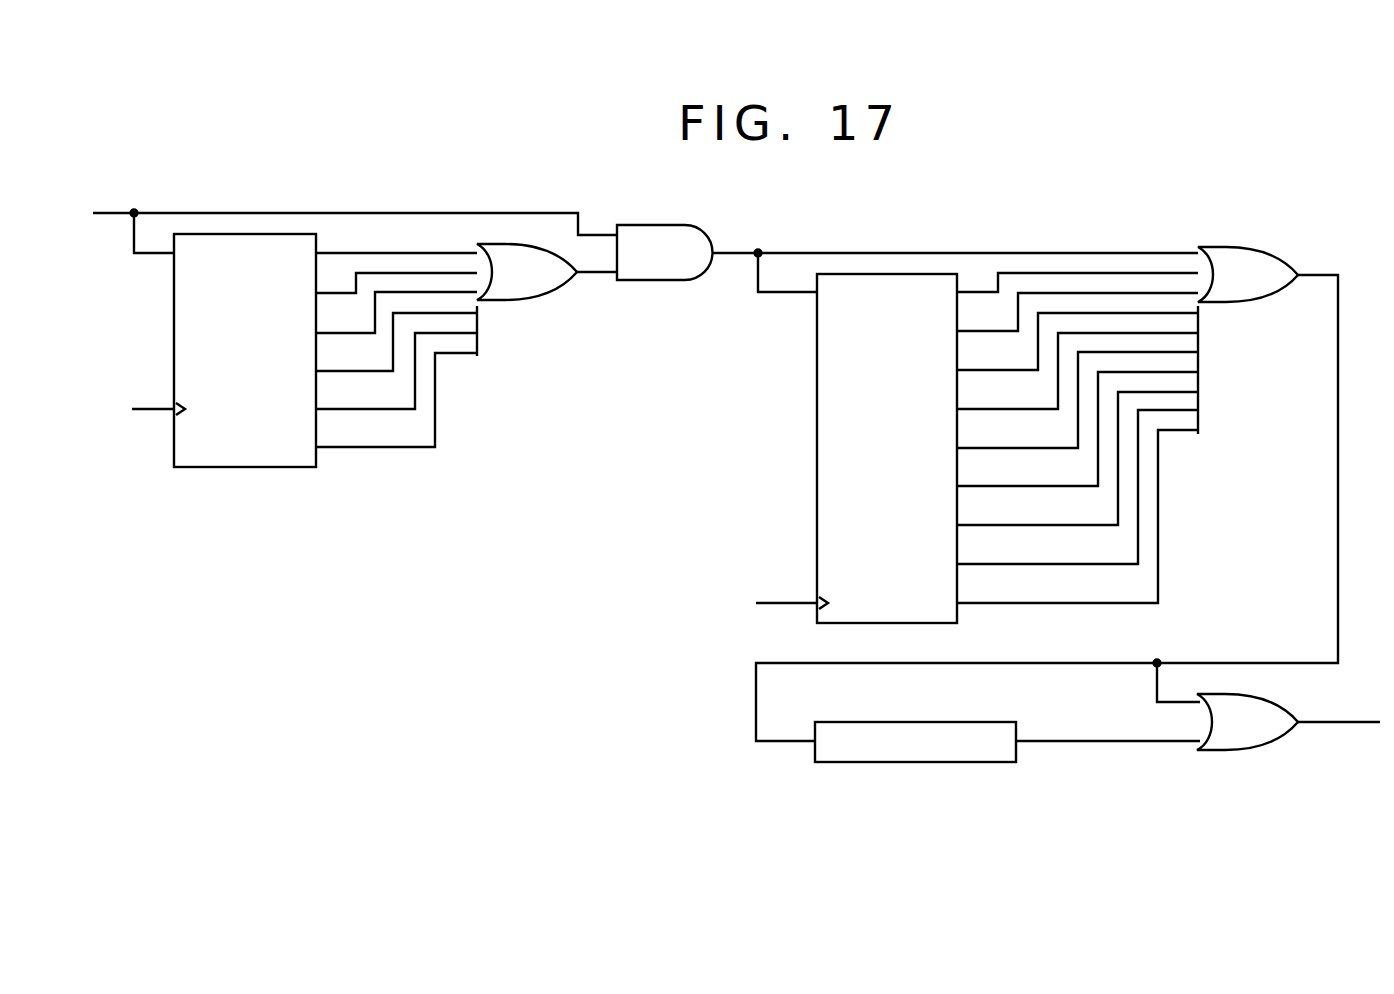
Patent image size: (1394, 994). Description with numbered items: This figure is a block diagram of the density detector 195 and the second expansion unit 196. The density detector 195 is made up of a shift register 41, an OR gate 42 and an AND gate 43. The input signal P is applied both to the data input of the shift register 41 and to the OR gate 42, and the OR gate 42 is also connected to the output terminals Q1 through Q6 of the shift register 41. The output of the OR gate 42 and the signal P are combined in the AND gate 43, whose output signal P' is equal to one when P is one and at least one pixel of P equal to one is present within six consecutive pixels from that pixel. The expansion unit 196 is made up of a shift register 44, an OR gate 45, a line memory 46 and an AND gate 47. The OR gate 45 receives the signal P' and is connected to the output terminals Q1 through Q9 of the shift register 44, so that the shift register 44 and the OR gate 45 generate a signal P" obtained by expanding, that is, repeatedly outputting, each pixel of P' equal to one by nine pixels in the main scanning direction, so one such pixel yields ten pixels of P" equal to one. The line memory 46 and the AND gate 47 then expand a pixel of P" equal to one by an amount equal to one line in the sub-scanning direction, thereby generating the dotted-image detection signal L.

The shift register 41 is at (241, 235).
The OR gate 42 is at (526, 302).
The AND gate 43 is at (648, 282).
The shift register 44 is at (881, 274).
The OR gate 45 is at (1237, 243).
The line memory 46 is at (961, 720).
The AND gate 47 is at (1235, 752).
The density detector 195 is at (504, 463).
The expansion unit 196 is at (730, 461).